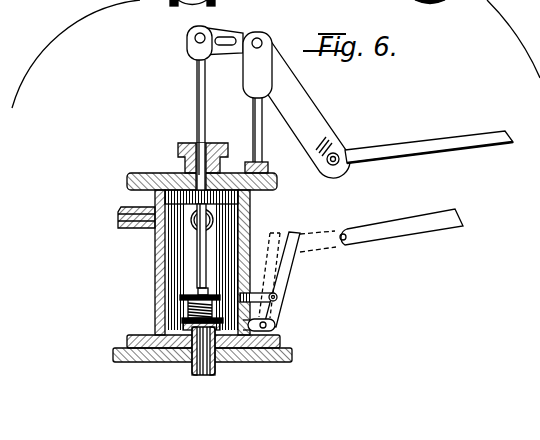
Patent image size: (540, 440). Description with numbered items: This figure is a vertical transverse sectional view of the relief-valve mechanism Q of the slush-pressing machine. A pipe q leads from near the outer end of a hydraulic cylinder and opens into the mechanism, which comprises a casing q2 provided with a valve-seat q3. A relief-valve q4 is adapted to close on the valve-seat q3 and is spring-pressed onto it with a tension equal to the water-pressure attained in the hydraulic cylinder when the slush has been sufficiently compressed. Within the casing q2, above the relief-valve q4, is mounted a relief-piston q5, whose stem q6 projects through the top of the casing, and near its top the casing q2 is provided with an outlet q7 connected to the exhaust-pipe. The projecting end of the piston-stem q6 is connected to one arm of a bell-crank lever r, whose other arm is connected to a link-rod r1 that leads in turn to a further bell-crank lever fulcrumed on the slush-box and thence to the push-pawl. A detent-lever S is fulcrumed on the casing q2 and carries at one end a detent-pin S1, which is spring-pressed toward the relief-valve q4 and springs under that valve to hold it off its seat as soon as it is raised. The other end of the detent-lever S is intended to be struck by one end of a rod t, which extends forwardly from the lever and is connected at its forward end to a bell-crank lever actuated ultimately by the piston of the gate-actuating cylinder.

The relief-valve mechanism Q is at (186, 262).
The pipe q is at (190, 372).
The casing q2 is at (162, 312).
The valve-seat q3 is at (160, 330).
The relief-valve q4 is at (212, 294).
The relief-piston q5 is at (252, 202).
The stem q6 is at (197, 125).
The outlet q7 is at (127, 226).
The bell-crank lever r is at (308, 103).
The link-rod r1 is at (397, 137).
The rod t is at (418, 222).
The detent-lever S is at (292, 277).
The detent-pin S1 is at (280, 327).